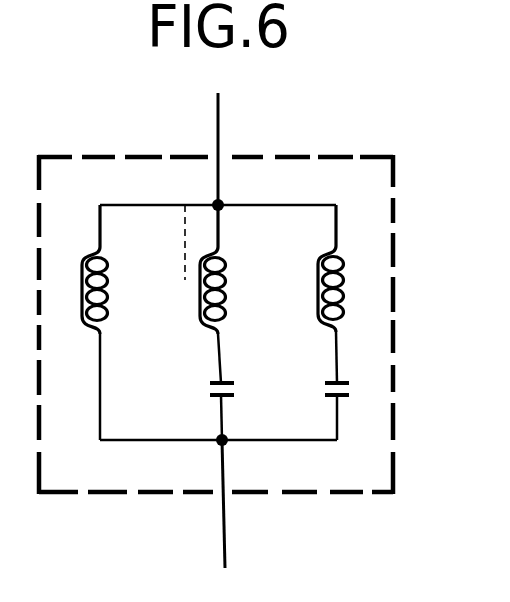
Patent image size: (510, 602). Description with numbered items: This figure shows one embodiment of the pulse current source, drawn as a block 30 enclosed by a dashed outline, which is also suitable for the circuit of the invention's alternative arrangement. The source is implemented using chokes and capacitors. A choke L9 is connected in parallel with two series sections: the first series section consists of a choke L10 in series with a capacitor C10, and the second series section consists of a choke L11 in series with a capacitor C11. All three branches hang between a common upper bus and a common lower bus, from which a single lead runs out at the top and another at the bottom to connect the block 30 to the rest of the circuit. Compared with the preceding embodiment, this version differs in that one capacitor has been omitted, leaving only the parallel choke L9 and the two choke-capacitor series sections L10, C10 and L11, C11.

The filter circuit block 30 is at (92, 157).
The choke L9 is at (108, 268).
The choke L10 is at (225, 263).
The choke L11 is at (342, 277).
The capacitor C10 is at (210, 382).
The capacitor C11 is at (328, 382).